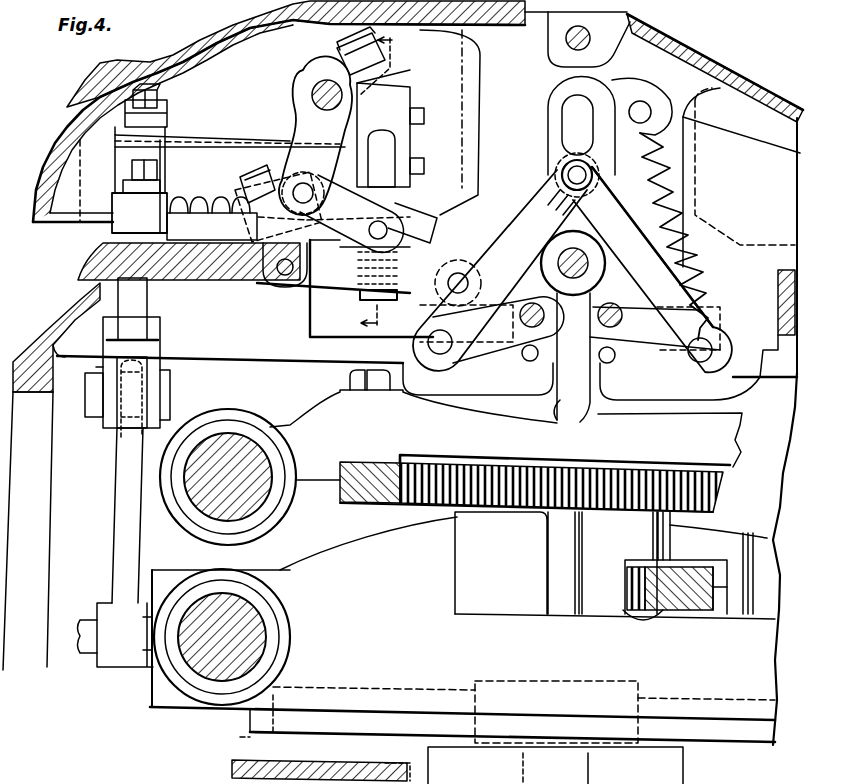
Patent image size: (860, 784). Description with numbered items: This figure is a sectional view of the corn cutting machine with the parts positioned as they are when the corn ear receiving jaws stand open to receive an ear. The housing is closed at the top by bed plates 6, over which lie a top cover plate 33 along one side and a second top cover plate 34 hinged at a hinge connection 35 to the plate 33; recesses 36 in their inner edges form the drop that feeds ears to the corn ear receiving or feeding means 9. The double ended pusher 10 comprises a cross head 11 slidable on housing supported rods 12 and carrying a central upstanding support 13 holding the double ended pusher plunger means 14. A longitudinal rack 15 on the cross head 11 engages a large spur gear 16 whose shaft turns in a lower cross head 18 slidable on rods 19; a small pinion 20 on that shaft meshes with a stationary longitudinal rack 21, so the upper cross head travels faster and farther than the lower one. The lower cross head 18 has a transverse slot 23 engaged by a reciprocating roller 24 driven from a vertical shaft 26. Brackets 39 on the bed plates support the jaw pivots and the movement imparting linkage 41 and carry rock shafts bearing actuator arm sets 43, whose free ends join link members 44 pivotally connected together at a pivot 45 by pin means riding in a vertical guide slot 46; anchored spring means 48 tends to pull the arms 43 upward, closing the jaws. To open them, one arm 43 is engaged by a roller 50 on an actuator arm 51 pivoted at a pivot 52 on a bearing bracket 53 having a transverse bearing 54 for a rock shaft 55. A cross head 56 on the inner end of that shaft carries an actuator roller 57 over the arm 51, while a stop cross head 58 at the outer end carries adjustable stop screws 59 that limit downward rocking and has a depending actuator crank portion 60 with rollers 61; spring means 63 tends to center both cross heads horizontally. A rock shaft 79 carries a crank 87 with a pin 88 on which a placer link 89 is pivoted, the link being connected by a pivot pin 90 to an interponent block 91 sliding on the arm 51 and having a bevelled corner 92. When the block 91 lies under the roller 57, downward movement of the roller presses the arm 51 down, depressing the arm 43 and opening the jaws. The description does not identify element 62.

The bed plates 6 is at (176, 281).
The corn ear receiving or feeding means 9 is at (384, 184).
The pusher 10 is at (626, 290).
The cross head 11 is at (728, 445).
The rods 12 is at (205, 516).
The central upstanding support 13 is at (572, 412).
The double ended pusher plunger means 14 is at (583, 263).
The longitudinal rack 15 is at (345, 505).
The large spur gear 16 is at (440, 512).
The lower cross head 18 is at (410, 622).
The rods 19 is at (218, 675).
The small pinion 20 is at (630, 585).
The longitudinal rack 21 is at (660, 572).
The transverse slot 23 is at (270, 736).
The reciprocating roller 24 is at (580, 672).
The vertical shaft 26 is at (594, 781).
The top cover plate 33 is at (772, 98).
The top cover plate 34 is at (525, 15).
The hinge connection 35 is at (562, 55).
The recesses 36 is at (489, 98).
The brackets 39 is at (722, 385).
The movement imparting linkage 41 is at (642, 82).
The actuator arm sets 43 is at (497, 345).
The link members 44 is at (548, 212).
The pivot connection 45 is at (566, 168).
The vertical guide slot 46 is at (555, 118).
The anchored spring means 48 is at (688, 176).
The roller 50 is at (482, 252).
The actuator arm 51 is at (318, 292).
The pivot 52 is at (278, 276).
The bearing bracket 53 is at (211, 205).
The transverse bearing 54 is at (197, 138).
The rock shaft 55 is at (116, 187).
The cross head 56 is at (400, 120).
The actuator roller 57 is at (388, 86).
The stop cross head 58 is at (125, 152).
The adjustable stop screw 59 is at (133, 95).
The depending actuator crank portion 60 is at (108, 292).
The rollers 61 is at (128, 440).
The bracket 62 is at (122, 492).
The spring means 63 is at (310, 318).
The rock shaft 79 is at (300, 78).
The crank 87 is at (292, 108).
The pin 88 is at (288, 160).
The placer link 89 is at (303, 182).
The pivot pin connection 90 is at (352, 258).
The interponent block 91 is at (430, 243).
The bevelled corner portion 92 is at (450, 122).